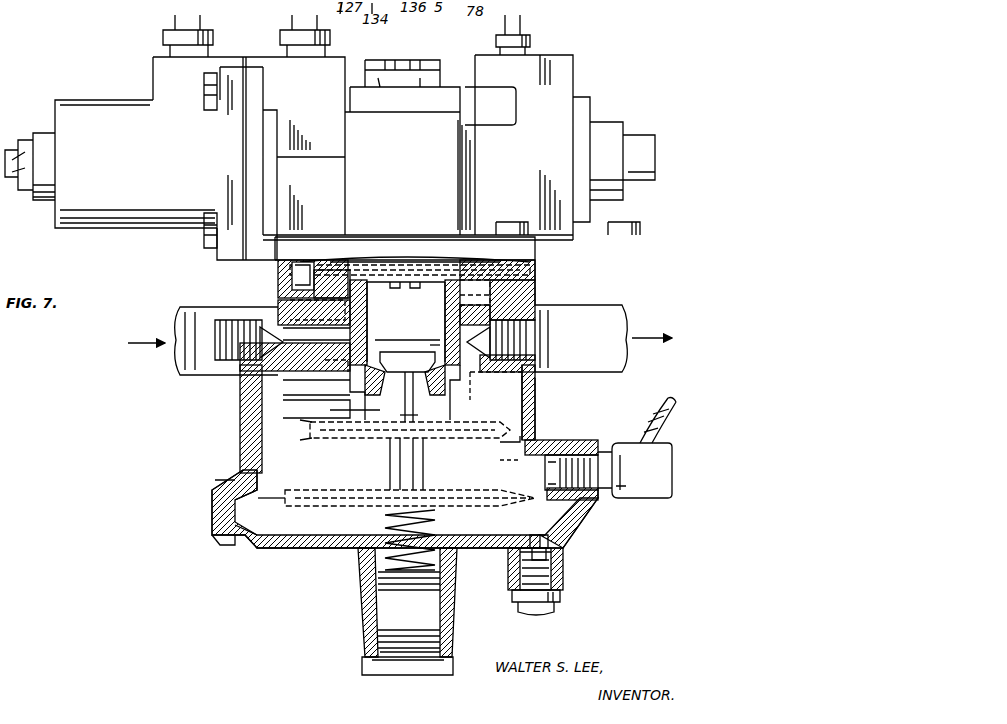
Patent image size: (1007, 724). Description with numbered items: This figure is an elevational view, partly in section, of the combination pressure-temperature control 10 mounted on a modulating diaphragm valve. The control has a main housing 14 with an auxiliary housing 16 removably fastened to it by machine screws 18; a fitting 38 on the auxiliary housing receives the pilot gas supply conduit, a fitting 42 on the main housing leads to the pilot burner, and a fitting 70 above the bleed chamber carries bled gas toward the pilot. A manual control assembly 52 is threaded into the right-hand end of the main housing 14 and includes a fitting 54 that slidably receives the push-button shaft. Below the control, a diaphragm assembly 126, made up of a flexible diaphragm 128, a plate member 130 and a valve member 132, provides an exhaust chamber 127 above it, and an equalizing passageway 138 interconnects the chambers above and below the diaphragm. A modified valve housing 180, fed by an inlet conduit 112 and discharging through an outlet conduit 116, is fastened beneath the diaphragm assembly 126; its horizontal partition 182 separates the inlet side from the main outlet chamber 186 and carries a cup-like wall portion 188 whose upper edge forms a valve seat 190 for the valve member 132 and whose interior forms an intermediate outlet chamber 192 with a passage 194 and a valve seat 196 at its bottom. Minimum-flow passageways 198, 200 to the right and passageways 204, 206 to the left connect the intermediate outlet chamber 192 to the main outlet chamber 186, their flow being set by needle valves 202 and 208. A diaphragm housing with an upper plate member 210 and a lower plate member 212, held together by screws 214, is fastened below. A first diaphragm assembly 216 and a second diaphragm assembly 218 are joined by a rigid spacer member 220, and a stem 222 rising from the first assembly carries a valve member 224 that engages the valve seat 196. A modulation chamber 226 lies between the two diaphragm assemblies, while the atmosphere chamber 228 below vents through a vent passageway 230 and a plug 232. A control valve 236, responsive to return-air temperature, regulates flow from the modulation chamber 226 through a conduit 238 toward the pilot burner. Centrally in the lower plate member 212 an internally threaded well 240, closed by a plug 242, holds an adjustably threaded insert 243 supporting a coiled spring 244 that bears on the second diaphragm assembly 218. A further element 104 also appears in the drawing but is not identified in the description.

The combination pressure-temperature control 10 is at (596, 86).
The main housing 14 is at (412, 171).
The auxiliary housing 16 is at (124, 98).
The machine screws 18 is at (204, 238).
The fitting 38 is at (163, 38).
The fitting 42 is at (280, 38).
The manual control assembly 52 is at (608, 118).
The fitting 54 is at (591, 105).
The fitting 70 is at (532, 40).
The passage 104 is at (338, 322).
The inlet conduit 112 is at (186, 376).
The outlet conduit 116 is at (590, 374).
The diaphragm assembly 126 is at (410, 300).
The exhaust chamber 127 is at (512, 250).
The flexible diaphragm 128 is at (347, 262).
The plate member 130 is at (395, 262).
The valve member 132 is at (332, 284).
The equalizing passageway 138 is at (290, 284).
The modified valve housing 180 is at (540, 290).
The partition 182 is at (305, 385).
The outlet chamber 186 is at (458, 396).
The cup-like wall portion 188 is at (405, 322).
The valve seat 190 is at (497, 292).
The intermediate outlet chamber 192 is at (382, 326).
The passage 194 is at (355, 401).
The valve seat 196 is at (340, 392).
The minimum flow passageway 198 is at (400, 372).
The minimum flow passageway 200 is at (480, 380).
The needle valve 202 is at (505, 342).
The passageway 204 is at (338, 362).
The passageway 206 is at (245, 432).
The needle valve 208 is at (266, 312).
The upper plate member 210 is at (555, 440).
The lower plate member 212 is at (576, 536).
The screws 214 is at (224, 548).
The first diaphragm assembly 216 is at (420, 440).
The second diaphragm assembly 218 is at (478, 478).
The rigid spacer member 220 is at (398, 473).
The stem 222 is at (402, 406).
The valve member 224 is at (435, 332).
The modulation chamber 226 is at (292, 476).
The exhaust or atmosphere chamber 228 is at (294, 530).
The vent passageway 230 is at (538, 536).
The plug 232 is at (565, 578).
The control valve 236 is at (673, 462).
The conduit 238 is at (660, 414).
The internally threaded well 240 is at (358, 592).
The plug 242 is at (380, 665).
The adjustably threaded insert 243 is at (445, 584).
The coiled spring 244 is at (437, 534).